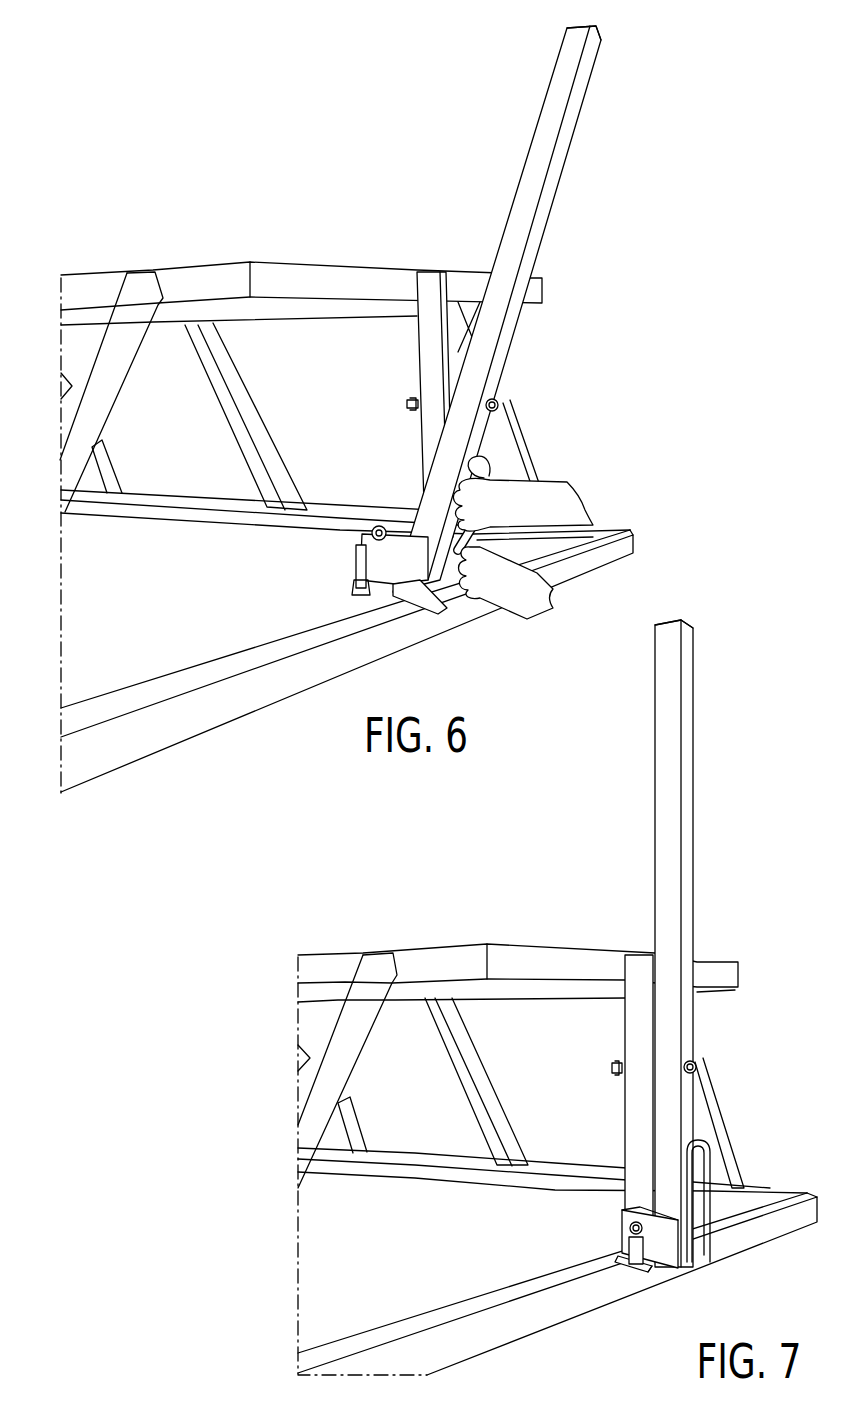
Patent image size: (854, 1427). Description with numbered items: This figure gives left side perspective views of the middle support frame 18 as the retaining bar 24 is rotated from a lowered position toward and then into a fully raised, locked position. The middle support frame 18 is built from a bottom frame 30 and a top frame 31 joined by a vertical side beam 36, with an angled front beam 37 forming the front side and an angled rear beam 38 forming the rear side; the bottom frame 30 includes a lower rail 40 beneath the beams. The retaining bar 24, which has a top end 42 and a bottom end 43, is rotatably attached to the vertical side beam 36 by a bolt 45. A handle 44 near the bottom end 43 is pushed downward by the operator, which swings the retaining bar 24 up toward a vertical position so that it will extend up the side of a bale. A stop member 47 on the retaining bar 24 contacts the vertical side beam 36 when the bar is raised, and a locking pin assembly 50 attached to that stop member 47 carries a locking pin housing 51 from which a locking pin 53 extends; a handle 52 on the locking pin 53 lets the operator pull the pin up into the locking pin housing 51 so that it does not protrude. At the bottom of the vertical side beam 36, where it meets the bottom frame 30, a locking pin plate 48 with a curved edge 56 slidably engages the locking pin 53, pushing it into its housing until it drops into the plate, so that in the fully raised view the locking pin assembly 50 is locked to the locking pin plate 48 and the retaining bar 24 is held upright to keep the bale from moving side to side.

In FIG. 6, the middle support frame 18 is at (303, 222).
In FIG. 7, the middle support frame 18 is at (518, 892).
In FIG. 6, the retaining bar 24 is at (556, 192).
In FIG. 7, the retaining bar 24 is at (695, 762).
In FIG. 6, the bottom frame 30 is at (167, 688).
In FIG. 7, the bottom frame 30 is at (411, 1325).
In FIG. 6, the top frame 31 is at (402, 272).
In FIG. 7, the top frame 31 is at (720, 960).
In FIG. 6, the vertical side beam 36 is at (420, 352).
In FIG. 7, the vertical side beam 36 is at (632, 1024).
In FIG. 6, the angled front beam 37 is at (110, 464).
In FIG. 7, the angled front beam 37 is at (350, 1130).
In FIG. 6, the angled rear beam 38 is at (108, 396).
In FIG. 7, the angled rear beam 38 is at (316, 1160).
In FIG. 6, the lower rail 40 is at (212, 478).
In FIG. 7, the lower rail 40 is at (435, 1133).
In FIG. 6, the top end 42 is at (600, 36).
In FIG. 7, the top end 42 is at (692, 628).
In FIG. 6, the bottom end 43 is at (416, 608).
In FIG. 6, the handle 44 is at (456, 590).
In FIG. 7, the handle 44 is at (706, 1160).
In FIG. 6, the bolt 45 is at (499, 405).
In FIG. 7, the bolt 45 is at (697, 1066).
In FIG. 6, the stop member 47 is at (388, 572).
In FIG. 7, the stop member 47 is at (668, 1265).
In FIG. 7, the locking pin plate 48 is at (649, 1272).
In FIG. 7, the locking pin assembly 50 is at (610, 1240).
In FIG. 6, the locking pin housing 51 is at (356, 582).
In FIG. 7, the locking pin housing 51 is at (628, 1251).
In FIG. 6, the handle 52 is at (380, 525).
In FIG. 7, the handle 52 is at (630, 1225).
In FIG. 6, the locking pin 53 is at (352, 592).
In FIG. 7, the curved edge 56 is at (625, 1272).